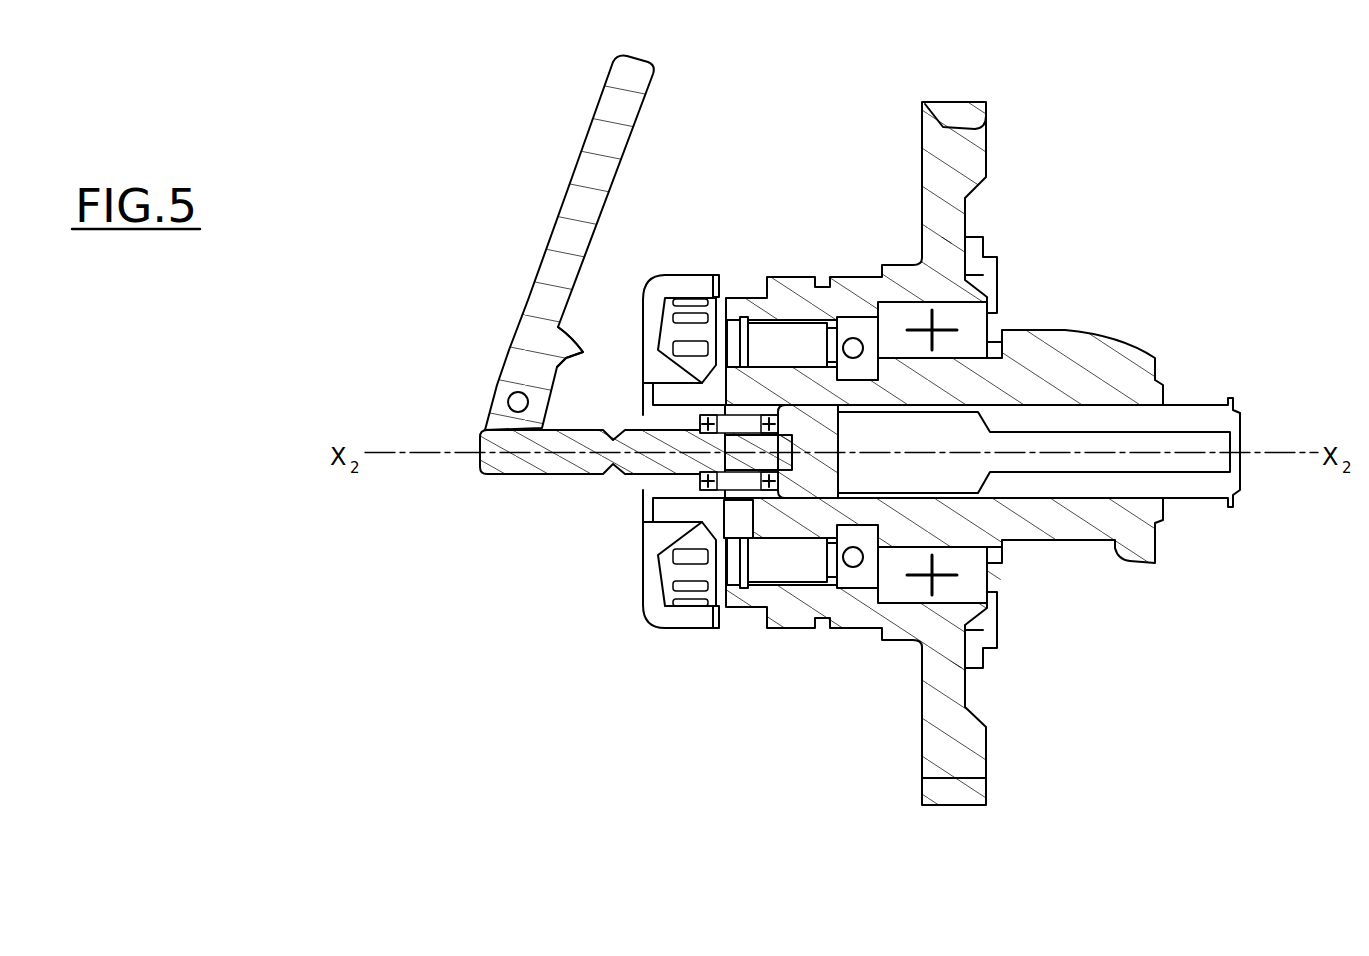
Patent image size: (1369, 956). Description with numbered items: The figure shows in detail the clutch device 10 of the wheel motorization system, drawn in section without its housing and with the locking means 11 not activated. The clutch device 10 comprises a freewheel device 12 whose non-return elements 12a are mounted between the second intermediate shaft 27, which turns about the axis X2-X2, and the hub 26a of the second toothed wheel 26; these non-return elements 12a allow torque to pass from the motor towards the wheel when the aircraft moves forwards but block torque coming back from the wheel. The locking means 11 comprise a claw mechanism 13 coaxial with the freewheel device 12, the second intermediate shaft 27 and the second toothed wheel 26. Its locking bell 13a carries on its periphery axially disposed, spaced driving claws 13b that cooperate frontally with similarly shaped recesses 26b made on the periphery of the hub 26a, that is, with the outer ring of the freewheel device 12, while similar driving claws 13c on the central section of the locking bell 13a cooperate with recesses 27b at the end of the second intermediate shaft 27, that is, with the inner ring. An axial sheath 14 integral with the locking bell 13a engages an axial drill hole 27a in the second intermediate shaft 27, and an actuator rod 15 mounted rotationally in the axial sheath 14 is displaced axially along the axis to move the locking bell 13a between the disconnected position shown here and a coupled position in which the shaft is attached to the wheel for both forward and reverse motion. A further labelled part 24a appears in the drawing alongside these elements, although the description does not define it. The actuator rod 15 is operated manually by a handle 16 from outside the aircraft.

The clutch device 10 is at (739, 222).
The locking means 11 is at (546, 192).
The freewheel device 12 is at (722, 562).
The non-return elements 12a is at (790, 290).
The claw mechanism 13 is at (640, 349).
The locking bell 13a is at (650, 333).
The driving claws 13b is at (697, 287).
The driving claws 13c is at (640, 392).
The axial sheath 14 is at (725, 413).
The actuator rod 15 is at (513, 440).
The handle 16 is at (596, 129).
The bushing 24a is at (780, 348).
The second toothed wheel 26 is at (953, 108).
The hub 26a is at (797, 617).
The recesses 26b is at (745, 612).
The second intermediate shaft 27 is at (775, 523).
The axial drill hole 27a is at (727, 463).
The recesses 27b is at (738, 520).